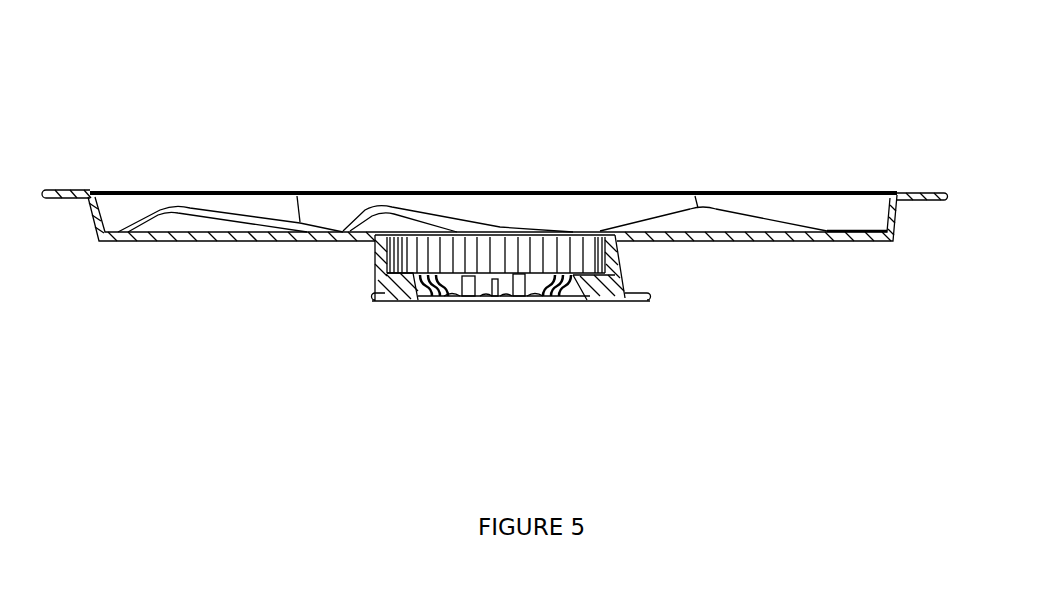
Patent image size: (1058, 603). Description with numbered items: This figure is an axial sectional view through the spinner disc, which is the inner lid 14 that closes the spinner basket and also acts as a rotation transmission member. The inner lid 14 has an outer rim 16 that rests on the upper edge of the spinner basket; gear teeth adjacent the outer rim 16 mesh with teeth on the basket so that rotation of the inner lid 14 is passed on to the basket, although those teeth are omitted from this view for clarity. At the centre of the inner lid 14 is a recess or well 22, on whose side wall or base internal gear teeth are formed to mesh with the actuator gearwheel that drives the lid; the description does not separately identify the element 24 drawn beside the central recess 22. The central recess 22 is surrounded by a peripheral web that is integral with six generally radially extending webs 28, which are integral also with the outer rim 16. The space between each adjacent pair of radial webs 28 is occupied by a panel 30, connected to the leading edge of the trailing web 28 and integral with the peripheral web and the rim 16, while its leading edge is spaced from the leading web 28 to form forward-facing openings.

The inner lid 14 is at (792, 192).
The outer rim 16 is at (922, 192).
The central recess 22 is at (613, 258).
The connector contacts 24 is at (403, 255).
The radial webs 28 is at (178, 237).
The panel 30 is at (190, 213).